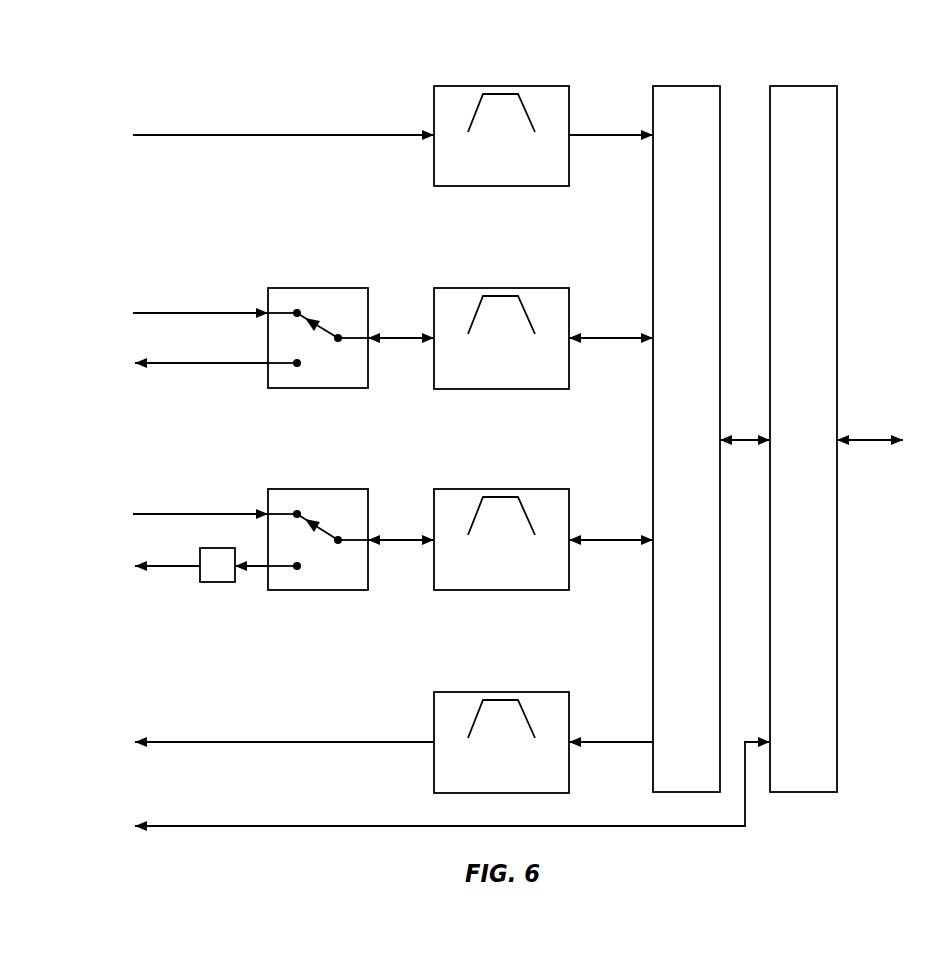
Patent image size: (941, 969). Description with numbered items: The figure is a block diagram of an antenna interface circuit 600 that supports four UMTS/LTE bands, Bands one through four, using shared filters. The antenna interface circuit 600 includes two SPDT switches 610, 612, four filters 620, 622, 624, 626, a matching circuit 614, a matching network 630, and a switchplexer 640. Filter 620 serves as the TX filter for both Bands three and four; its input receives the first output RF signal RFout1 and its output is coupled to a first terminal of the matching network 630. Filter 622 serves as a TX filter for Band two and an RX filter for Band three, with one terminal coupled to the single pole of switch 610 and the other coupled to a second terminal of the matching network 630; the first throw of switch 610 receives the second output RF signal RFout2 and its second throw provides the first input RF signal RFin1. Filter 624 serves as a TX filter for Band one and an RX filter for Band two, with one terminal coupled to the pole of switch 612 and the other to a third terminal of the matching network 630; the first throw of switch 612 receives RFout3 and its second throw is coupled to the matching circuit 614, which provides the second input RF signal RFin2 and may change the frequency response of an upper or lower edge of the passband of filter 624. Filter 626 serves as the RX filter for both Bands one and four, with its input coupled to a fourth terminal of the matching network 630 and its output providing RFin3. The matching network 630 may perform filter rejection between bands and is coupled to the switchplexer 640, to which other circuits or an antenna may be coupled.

The antenna interface circuit 600 is at (882, 42).
The SPDT switch 610 is at (314, 288).
The SPDT switch 612 is at (314, 489).
The matching circuit 614 is at (200, 560).
The filter 620 is at (570, 117).
The filter 622 is at (570, 354).
The filter 624 is at (570, 556).
The filter 626 is at (570, 757).
The matching network 630 is at (687, 86).
The switchplexer 640 is at (806, 86).